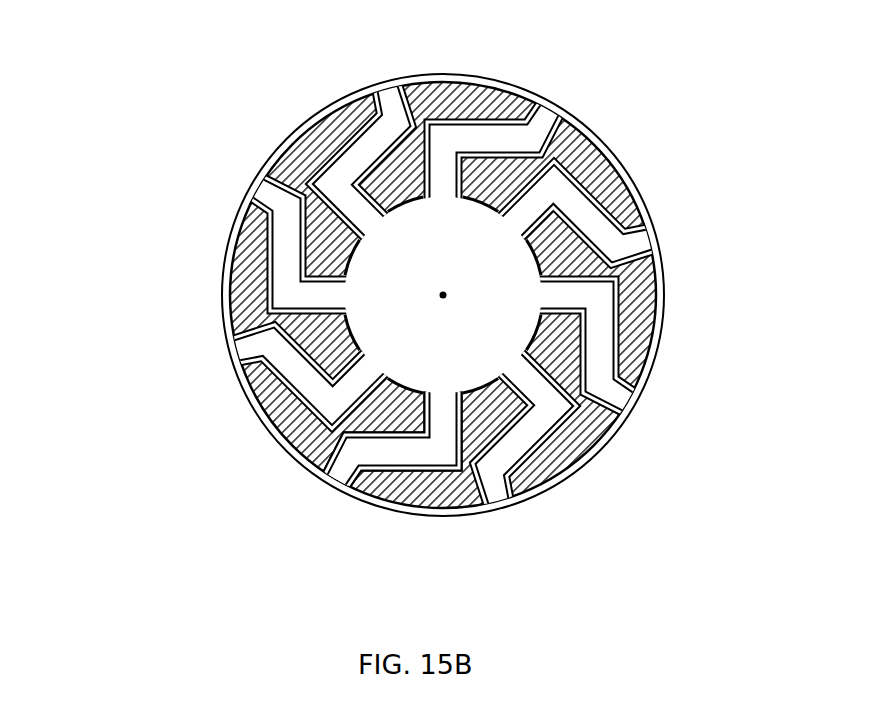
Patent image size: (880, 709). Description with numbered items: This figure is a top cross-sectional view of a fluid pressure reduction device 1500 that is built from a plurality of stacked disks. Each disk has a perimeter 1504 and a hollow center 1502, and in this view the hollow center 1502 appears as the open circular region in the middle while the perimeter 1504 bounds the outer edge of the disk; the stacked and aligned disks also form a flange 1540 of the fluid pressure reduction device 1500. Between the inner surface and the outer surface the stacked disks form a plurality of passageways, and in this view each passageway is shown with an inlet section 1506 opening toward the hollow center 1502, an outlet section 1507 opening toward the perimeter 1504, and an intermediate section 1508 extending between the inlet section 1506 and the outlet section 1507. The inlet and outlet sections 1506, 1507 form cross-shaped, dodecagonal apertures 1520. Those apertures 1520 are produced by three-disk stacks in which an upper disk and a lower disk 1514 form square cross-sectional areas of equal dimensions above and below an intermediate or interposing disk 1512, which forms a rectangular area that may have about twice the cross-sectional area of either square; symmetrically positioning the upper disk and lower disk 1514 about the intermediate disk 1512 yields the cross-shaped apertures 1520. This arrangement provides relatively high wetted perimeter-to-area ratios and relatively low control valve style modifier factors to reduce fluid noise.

The fluid pressure reduction device 1500 is at (186, 91).
The hollow center 1502 is at (424, 224).
The perimeter 1504 is at (619, 171).
The inlet section 1506 is at (446, 408).
The outlet section 1507 is at (346, 467).
The intermediate section 1508 is at (412, 448).
The intermediate disk 1512 is at (467, 99).
The lower disk 1514 is at (641, 357).
The dodecagonal aperture 1520 is at (529, 478).
The flange 1540 is at (620, 430).